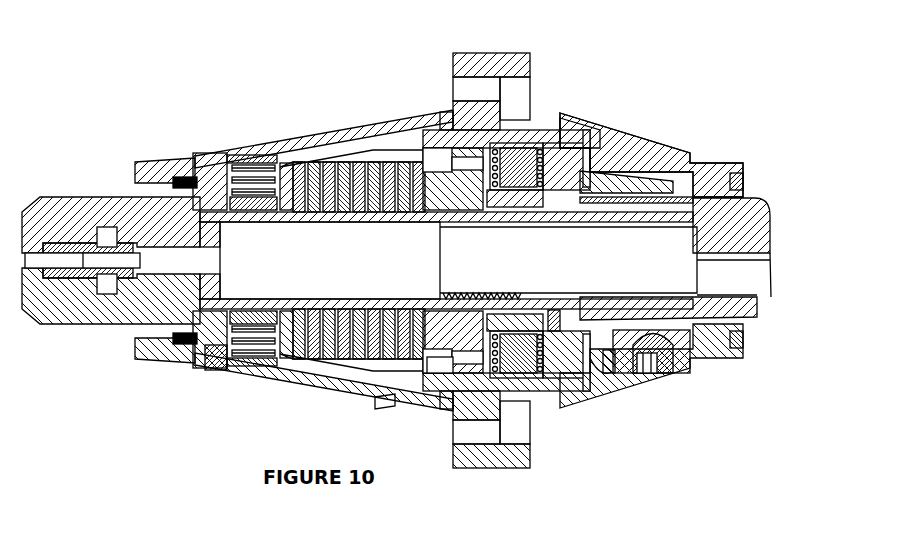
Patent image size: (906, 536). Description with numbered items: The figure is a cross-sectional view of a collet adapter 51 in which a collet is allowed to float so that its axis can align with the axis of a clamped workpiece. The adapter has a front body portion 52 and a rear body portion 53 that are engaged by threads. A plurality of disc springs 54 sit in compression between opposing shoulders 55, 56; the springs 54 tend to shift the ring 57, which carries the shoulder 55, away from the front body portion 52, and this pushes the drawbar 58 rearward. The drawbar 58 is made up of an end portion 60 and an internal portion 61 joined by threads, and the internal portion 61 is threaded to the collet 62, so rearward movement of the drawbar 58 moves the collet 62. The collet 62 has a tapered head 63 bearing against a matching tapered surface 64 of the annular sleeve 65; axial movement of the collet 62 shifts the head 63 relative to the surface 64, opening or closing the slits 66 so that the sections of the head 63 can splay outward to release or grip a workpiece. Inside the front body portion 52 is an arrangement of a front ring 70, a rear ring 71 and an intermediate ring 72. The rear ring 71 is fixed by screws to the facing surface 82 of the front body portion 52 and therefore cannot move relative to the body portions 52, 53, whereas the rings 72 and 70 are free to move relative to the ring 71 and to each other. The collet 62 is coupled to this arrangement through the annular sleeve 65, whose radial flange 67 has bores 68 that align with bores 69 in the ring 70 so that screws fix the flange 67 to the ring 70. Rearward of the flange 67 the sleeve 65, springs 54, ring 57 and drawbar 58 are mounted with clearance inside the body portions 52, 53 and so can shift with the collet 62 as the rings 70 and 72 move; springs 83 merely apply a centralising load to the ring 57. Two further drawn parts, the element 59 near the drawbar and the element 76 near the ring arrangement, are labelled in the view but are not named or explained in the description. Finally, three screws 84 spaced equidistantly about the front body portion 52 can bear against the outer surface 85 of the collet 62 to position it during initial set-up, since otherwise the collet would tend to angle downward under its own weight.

The collet adapter 51 is at (618, 70).
The front body portion 52 is at (660, 135).
The rear body portion 53 is at (300, 140).
The disc springs 54 is at (330, 137).
The shoulder 55 is at (277, 165).
The shoulder 56 is at (428, 162).
The ring 57 is at (175, 156).
The drawbar 58 is at (68, 197).
The pin 59 is at (133, 240).
The end portion 60 is at (82, 310).
The internal portion 61 is at (218, 362).
The collet 62 is at (673, 330).
The tapered head 63 is at (760, 223).
The tapered surface 64 is at (749, 296).
The annular sleeve 65 is at (554, 314).
The slits 66 is at (657, 247).
The radial flange 67 is at (443, 370).
The bores 68 is at (383, 398).
The bores 69 is at (432, 163).
The front ring 70 is at (462, 127).
The rear ring 71 is at (572, 142).
The intermediate ring 72 is at (552, 143).
The bearing 76 is at (523, 143).
The facing surface 82 is at (597, 368).
The springs 83 is at (247, 150).
The screws 84 is at (655, 373).
The outer surface 85 is at (610, 363).